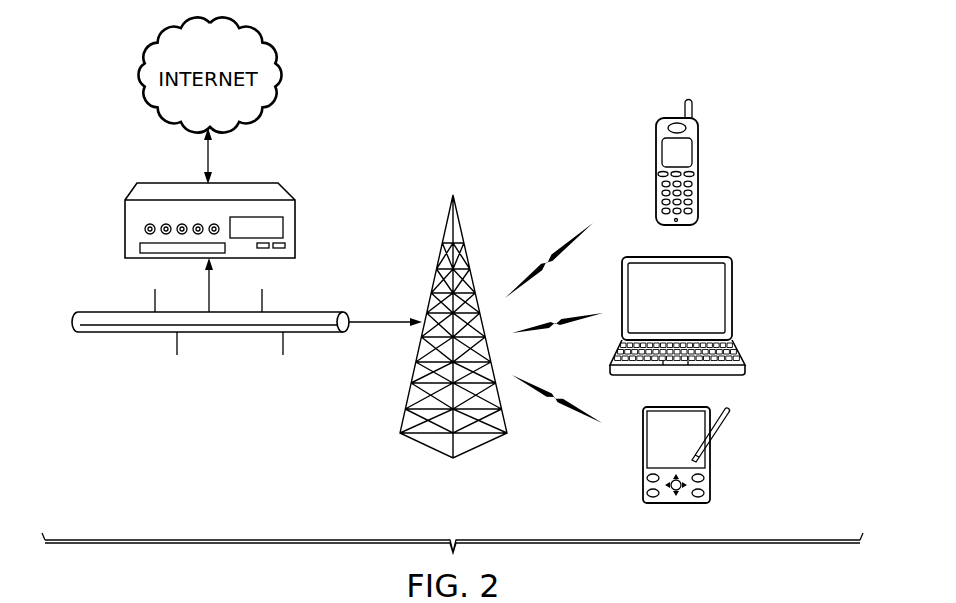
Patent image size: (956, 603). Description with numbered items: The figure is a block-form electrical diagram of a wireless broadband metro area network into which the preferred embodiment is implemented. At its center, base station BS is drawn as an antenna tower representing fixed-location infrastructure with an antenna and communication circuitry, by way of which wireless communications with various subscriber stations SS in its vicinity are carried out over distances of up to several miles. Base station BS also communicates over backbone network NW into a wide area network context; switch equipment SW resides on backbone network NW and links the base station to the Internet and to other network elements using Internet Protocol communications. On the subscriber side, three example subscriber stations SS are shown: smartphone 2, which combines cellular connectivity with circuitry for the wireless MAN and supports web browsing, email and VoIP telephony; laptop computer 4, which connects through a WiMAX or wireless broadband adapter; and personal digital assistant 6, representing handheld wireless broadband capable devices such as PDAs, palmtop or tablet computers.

The smartphone 2 is at (700, 173).
The laptop computer 4 is at (733, 300).
The personal digital assistant (PDA) 6 is at (700, 455).
The switch equipment SW is at (125, 226).
The backbone network NW is at (135, 333).
The base station BS is at (428, 298).
The subscriber stations SS is at (731, 297).